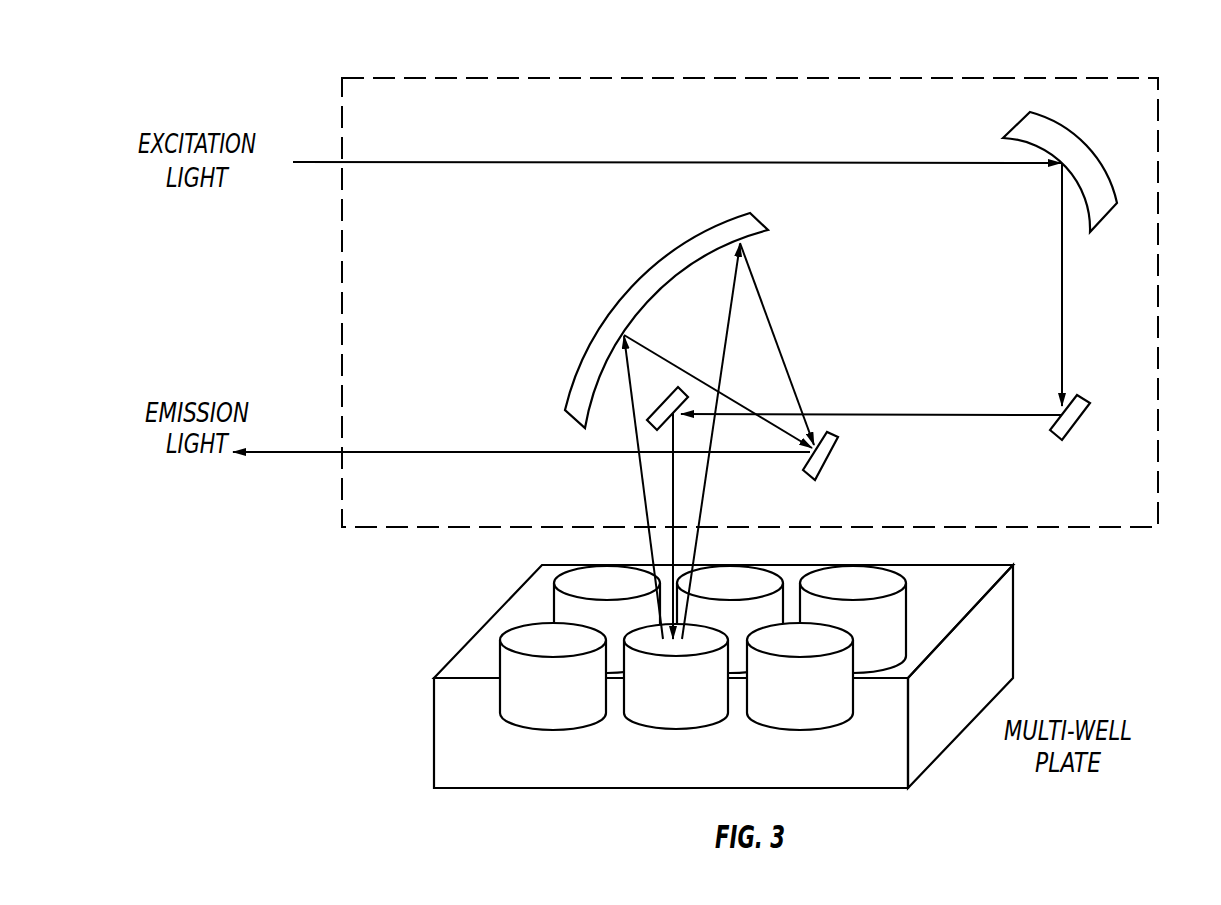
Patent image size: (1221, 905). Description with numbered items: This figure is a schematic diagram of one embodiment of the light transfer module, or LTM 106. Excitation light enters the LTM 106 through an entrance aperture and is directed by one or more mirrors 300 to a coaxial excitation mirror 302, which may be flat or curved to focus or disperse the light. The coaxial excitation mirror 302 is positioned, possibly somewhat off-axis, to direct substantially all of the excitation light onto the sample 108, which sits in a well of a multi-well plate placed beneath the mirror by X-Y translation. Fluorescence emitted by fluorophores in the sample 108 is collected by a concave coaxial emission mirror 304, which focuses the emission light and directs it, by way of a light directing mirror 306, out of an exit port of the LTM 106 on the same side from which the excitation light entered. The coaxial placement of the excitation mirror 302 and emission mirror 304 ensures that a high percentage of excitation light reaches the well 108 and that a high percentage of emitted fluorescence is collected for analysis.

The light transfer module 106 is at (750, 279).
The sample 108 is at (660, 702).
The mirror 300 is at (1003, 452).
The coaxial excitation mirror 302 is at (629, 440).
The coaxial emission mirror 304 is at (628, 320).
The light directing mirror 306 is at (825, 465).